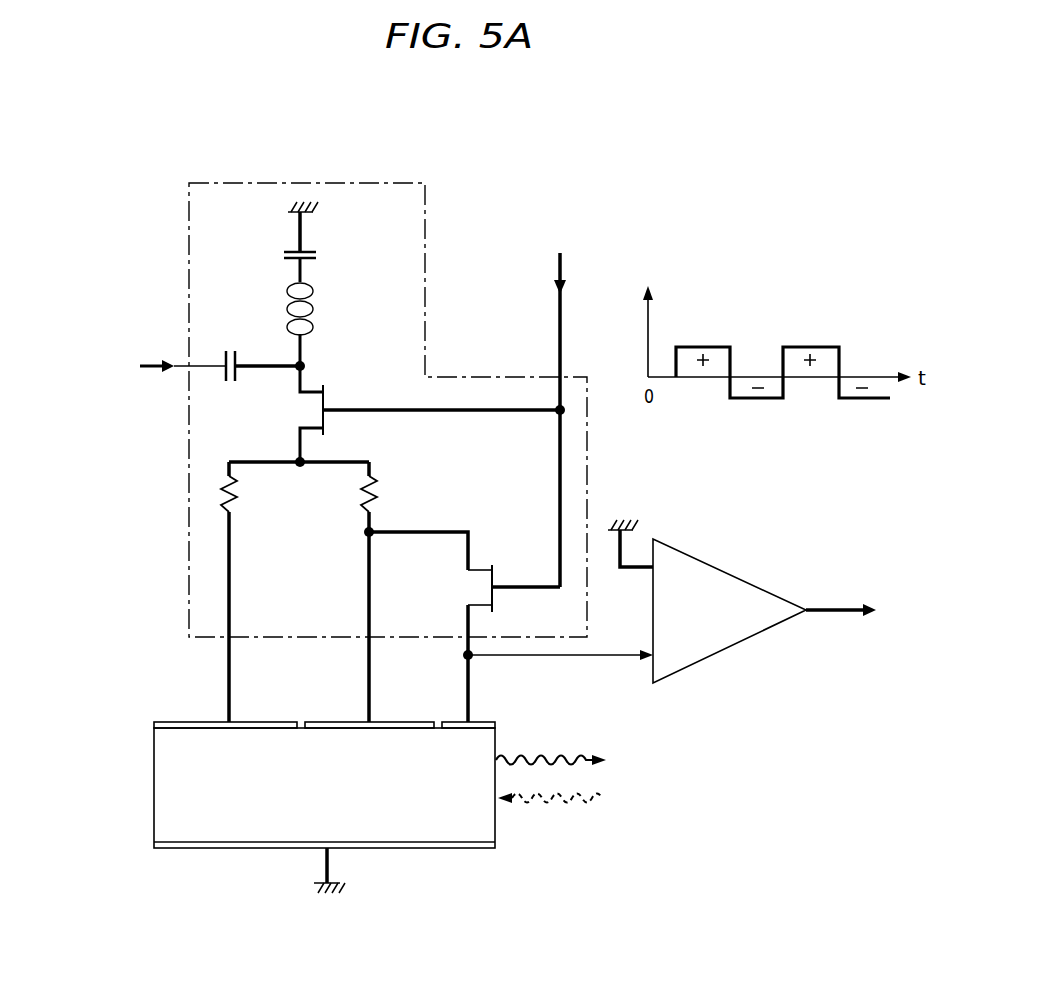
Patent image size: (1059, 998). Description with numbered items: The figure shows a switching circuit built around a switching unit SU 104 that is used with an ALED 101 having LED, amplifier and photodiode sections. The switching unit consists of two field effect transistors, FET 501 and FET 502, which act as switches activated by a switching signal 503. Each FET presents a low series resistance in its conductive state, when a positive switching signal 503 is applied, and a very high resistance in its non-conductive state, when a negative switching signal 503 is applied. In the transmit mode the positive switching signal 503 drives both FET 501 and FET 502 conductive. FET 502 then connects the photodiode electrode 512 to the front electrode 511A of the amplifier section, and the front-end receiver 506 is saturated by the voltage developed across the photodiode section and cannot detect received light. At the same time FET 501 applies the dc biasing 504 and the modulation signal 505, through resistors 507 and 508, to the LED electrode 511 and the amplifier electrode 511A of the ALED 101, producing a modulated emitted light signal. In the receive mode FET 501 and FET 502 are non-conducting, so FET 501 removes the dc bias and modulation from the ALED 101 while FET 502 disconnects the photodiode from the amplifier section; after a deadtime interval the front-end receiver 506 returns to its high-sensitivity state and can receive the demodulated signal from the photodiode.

The ALED 101 is at (154, 787).
The switching unit SU 104 is at (588, 420).
The FET 501 is at (326, 423).
The FET 502 is at (494, 598).
The switching signal 503 is at (590, 277).
The dc biasing 504 is at (338, 286).
The modulation signal 505 is at (168, 380).
The front-end receiver 506 is at (730, 573).
The resistor 507 is at (238, 493).
The resistor 508 is at (378, 493).
The LED electrode 511 is at (265, 720).
The front electrode of the amplifier section 511A is at (350, 720).
The photodiode electrode 512 is at (490, 720).